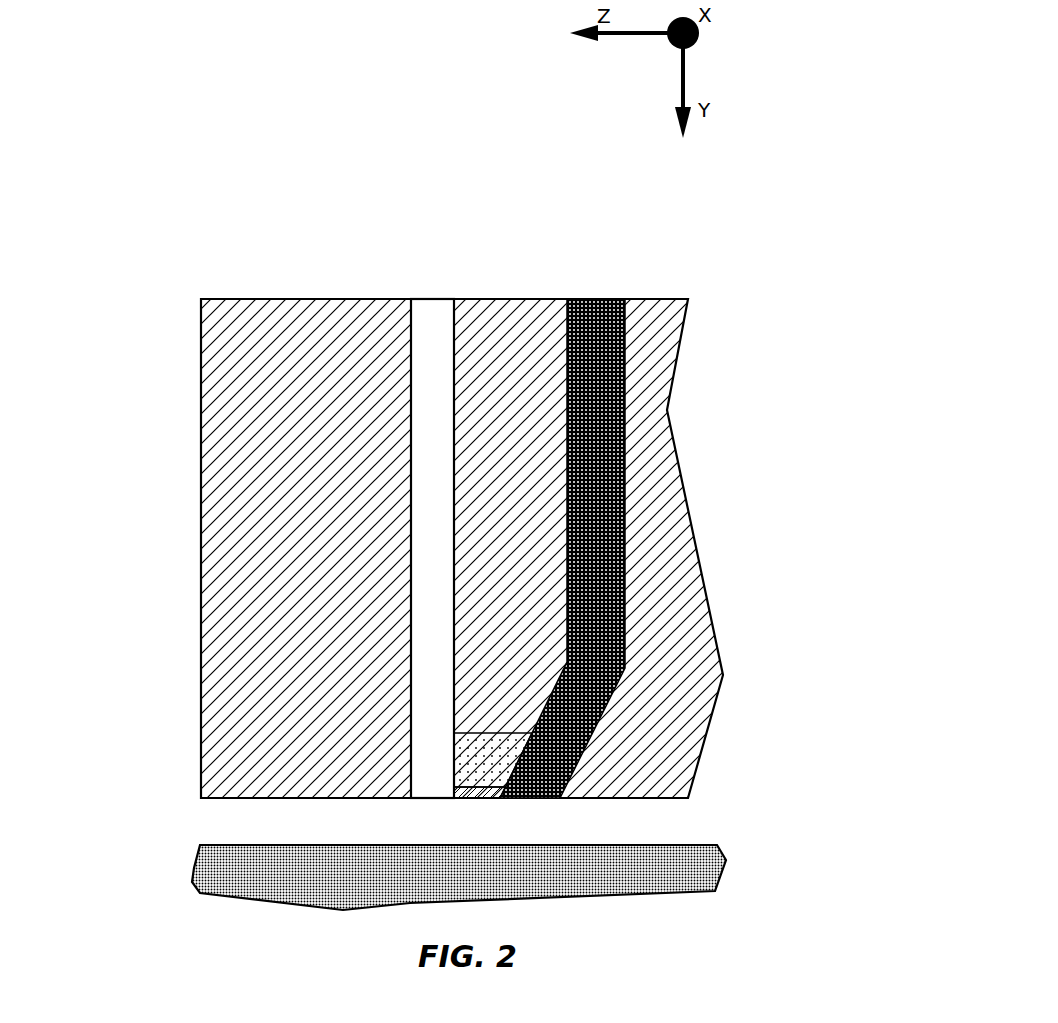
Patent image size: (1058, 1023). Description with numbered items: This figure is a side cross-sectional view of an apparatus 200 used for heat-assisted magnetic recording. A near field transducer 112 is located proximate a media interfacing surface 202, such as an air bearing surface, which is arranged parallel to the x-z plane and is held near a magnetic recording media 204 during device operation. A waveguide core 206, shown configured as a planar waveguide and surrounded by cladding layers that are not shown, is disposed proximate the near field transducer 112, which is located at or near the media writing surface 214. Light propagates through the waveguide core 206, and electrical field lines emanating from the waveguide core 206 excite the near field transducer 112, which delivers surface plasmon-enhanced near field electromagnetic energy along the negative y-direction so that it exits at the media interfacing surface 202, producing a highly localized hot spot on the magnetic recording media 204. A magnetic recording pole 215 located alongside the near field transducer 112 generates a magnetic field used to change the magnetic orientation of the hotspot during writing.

The apparatus 200 is at (140, 251).
The media interfacing surface 202 is at (232, 797).
The magnetic recording media 204 is at (705, 858).
The waveguide core 206 is at (432, 548).
The near field transducer 112 is at (473, 773).
The media writing surface 214 is at (660, 846).
The magnetic recording pole 215 is at (607, 473).